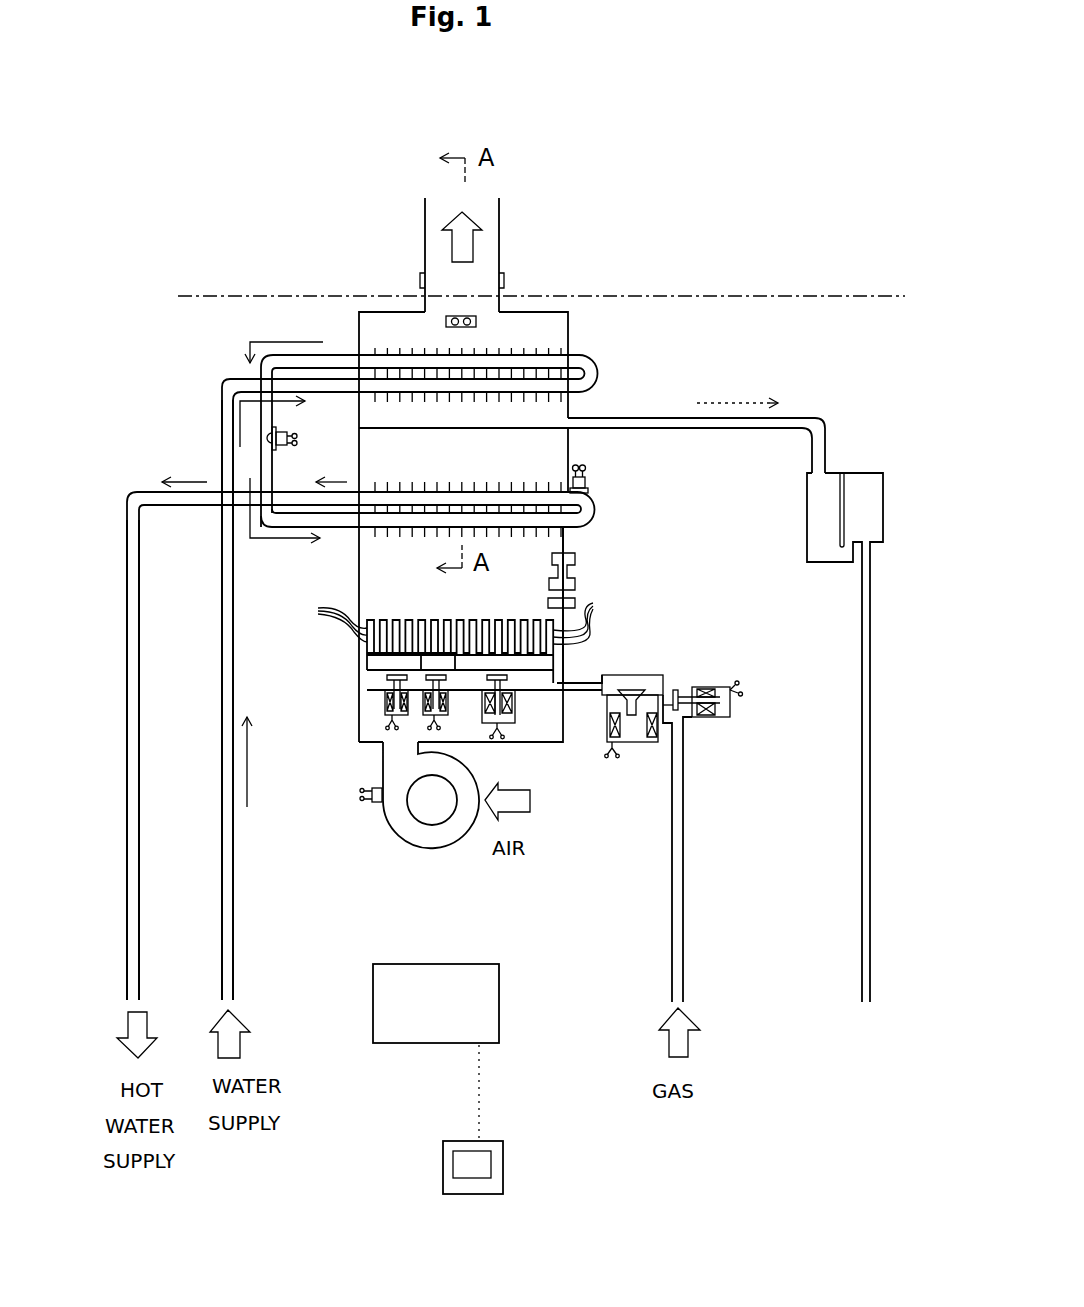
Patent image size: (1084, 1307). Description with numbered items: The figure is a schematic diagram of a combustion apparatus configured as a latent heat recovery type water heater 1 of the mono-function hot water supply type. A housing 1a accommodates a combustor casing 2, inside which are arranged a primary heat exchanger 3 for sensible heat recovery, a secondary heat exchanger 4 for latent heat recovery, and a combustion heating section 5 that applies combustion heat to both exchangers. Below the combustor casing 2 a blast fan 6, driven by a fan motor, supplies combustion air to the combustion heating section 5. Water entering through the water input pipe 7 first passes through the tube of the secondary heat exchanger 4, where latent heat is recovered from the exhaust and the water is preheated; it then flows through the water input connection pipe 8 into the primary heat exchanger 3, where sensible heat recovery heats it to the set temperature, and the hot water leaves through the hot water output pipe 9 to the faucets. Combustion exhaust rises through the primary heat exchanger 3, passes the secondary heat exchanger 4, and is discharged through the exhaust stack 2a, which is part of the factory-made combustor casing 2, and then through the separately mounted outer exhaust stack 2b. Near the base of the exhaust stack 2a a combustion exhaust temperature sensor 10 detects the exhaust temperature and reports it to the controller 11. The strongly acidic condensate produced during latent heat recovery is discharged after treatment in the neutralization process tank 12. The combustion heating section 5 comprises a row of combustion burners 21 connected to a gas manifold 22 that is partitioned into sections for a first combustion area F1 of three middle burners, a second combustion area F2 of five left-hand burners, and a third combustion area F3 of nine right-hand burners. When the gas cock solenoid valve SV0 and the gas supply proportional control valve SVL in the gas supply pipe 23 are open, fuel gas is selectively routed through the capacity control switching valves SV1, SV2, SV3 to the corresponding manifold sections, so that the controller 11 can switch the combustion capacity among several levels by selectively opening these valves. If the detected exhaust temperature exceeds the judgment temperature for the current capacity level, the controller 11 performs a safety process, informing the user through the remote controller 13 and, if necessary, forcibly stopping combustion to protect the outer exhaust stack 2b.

The latent heat recovery type water heater 1 is at (578, 227).
The housing 1a is at (630, 293).
The combustor casing 2 is at (357, 450).
The exhaust stack 2a is at (422, 307).
The outer exhaust stack 2b is at (422, 238).
The primary heat exchanger 3 is at (522, 478).
The secondary heat exchanger 4 is at (536, 345).
The combustion heating section 5 is at (358, 677).
The blast fan 6 is at (392, 828).
The water input pipe 7 is at (220, 678).
The water input connection pipe 8 is at (273, 483).
The hot water output pipe 9 is at (137, 560).
The combustion exhaust temperature sensor 10 is at (480, 323).
The controller 11 is at (450, 1015).
The neutralization process tank 12 is at (805, 535).
The remote controller 13 is at (497, 1140).
The combustion burners 21 is at (456, 616).
The gas manifold 22 is at (363, 662).
The gas supply pipe 23 is at (673, 855).
The first combustion area F1 is at (437, 617).
The second combustion area F2 is at (381, 612).
The third combustion area F3 is at (453, 607).
The gas cock solenoid valve SV0 is at (708, 720).
The first capacity control switching valve SV1 is at (423, 705).
The second capacity control switching valve SV2 is at (383, 703).
The third capacity control switching valve SV3 is at (517, 707).
The gas supply proportional control valve SVL is at (648, 675).